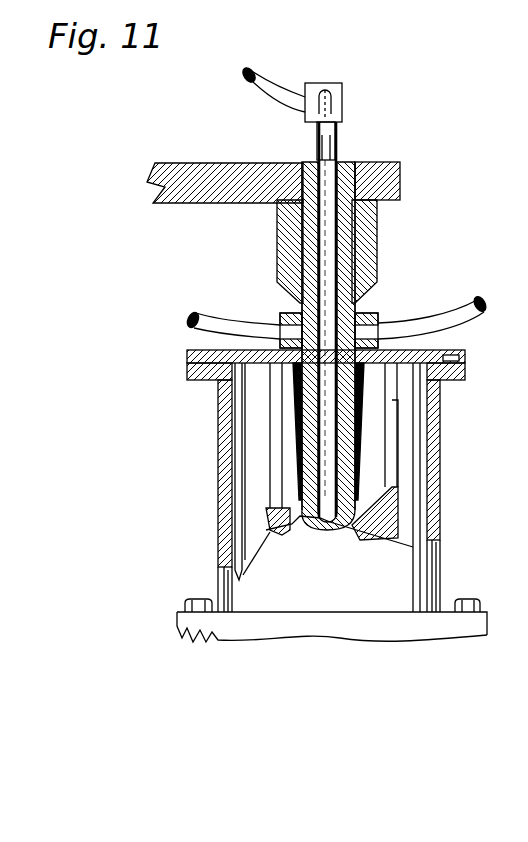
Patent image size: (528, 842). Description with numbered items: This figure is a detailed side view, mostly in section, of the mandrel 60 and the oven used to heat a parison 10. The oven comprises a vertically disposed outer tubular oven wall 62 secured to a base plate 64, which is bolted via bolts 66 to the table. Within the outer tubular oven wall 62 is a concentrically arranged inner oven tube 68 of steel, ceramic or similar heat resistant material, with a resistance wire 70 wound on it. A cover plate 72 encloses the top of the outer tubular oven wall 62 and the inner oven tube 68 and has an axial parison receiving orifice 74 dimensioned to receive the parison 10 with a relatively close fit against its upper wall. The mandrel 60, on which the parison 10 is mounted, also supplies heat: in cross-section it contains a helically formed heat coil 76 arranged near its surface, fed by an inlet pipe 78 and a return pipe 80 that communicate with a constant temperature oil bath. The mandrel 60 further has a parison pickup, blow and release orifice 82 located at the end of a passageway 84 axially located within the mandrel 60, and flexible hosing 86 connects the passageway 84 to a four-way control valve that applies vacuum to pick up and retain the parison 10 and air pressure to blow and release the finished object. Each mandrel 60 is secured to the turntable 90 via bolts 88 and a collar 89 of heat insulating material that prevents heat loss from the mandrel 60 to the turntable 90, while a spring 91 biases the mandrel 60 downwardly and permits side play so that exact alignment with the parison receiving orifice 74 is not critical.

The parison 10 is at (365, 440).
The mandrel 60 is at (362, 412).
The outer tubular oven wall 62 is at (292, 414).
The base plate 64 is at (220, 640).
The bolts 66 is at (193, 598).
The inner oven tube 68 is at (238, 487).
The resistance wire 70 is at (267, 508).
The cover plate 72 is at (200, 350).
The parison receiving orifice 74 is at (267, 363).
The heat coil 76 is at (400, 430).
The inlet pipe 78 is at (410, 325).
The return pipe 80 is at (214, 318).
The parison pickup, blow and release orifice 82 is at (330, 522).
The passageway 84 is at (340, 140).
The flexible hosing 86 is at (272, 90).
The bolts 88 is at (383, 232).
The collar 89 is at (370, 258).
The turntable 90 is at (400, 172).
The spring 91 is at (343, 168).